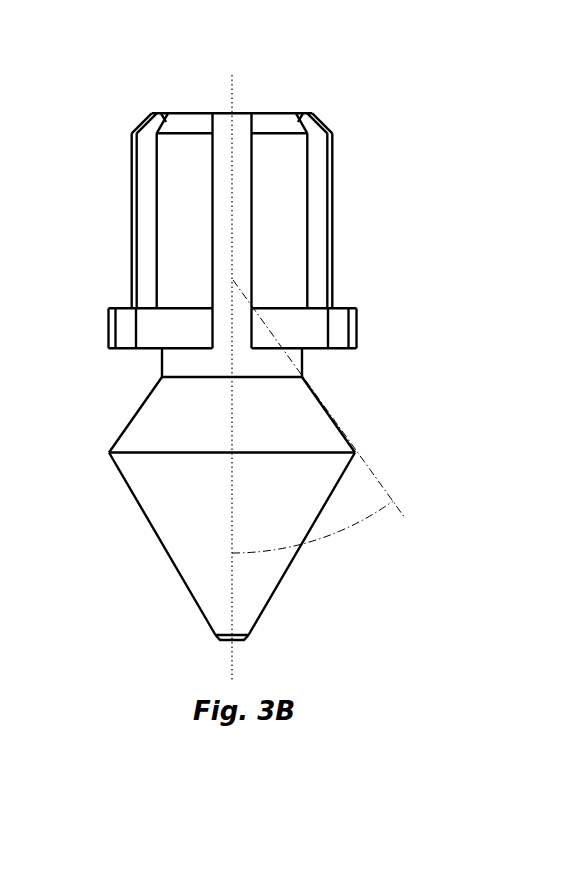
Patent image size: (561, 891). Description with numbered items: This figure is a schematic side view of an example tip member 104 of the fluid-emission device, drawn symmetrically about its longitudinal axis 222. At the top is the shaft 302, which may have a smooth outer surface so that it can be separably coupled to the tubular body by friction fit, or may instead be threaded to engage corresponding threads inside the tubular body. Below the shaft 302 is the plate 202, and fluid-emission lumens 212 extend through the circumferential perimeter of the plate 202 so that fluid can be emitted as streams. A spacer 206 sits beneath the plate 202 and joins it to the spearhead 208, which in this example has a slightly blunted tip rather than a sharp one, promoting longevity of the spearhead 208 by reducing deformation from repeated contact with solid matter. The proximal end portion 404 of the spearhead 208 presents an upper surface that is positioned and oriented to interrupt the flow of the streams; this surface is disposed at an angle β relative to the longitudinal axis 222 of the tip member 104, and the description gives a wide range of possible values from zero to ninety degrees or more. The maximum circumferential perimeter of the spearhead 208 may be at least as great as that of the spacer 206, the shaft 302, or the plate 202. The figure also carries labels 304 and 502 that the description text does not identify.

The tip member 104 is at (241, 53).
The shaft 302 is at (190, 195).
The slot 304 is at (223, 152).
The plate 202 is at (292, 352).
The fluid-emission lumen 212 is at (227, 328).
The spacer 206 is at (178, 358).
The proximal end portion 404 is at (188, 413).
The spearhead 208 is at (178, 527).
The longitudinal axis 222 is at (233, 661).
The angle reference line 502 is at (377, 480).